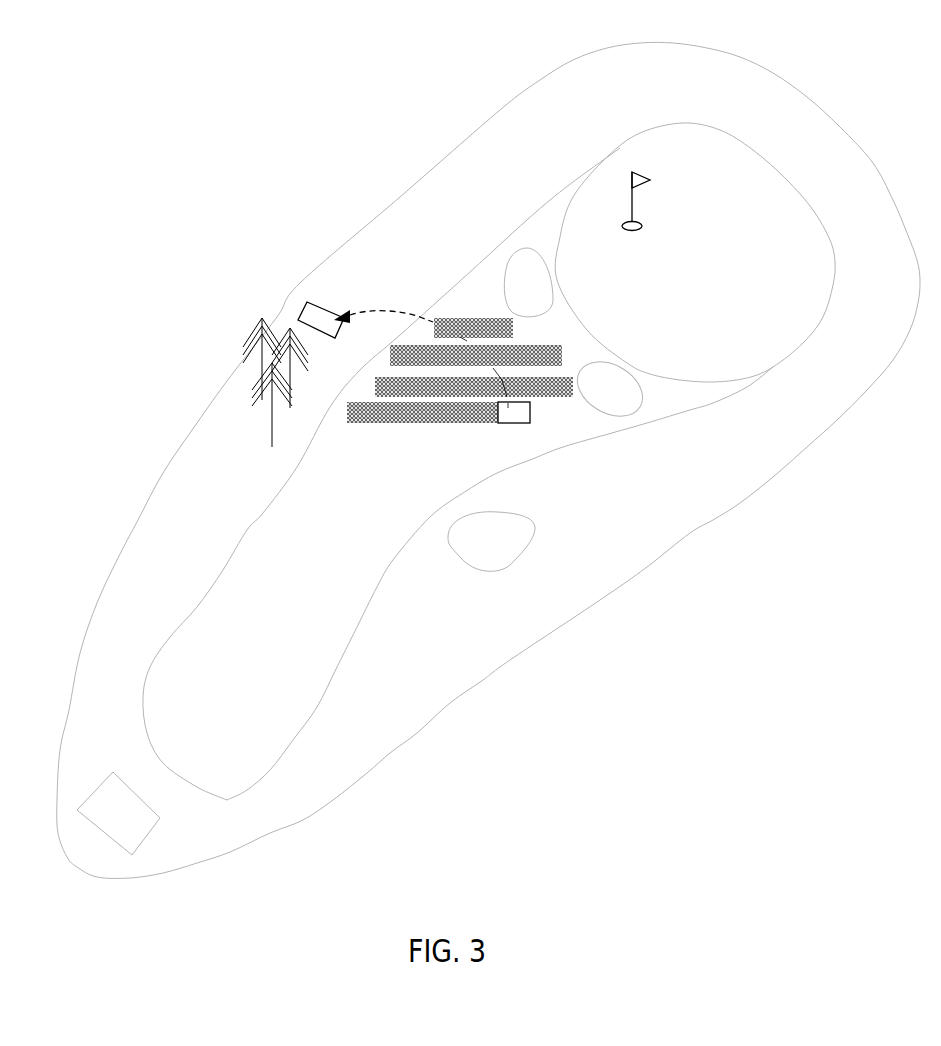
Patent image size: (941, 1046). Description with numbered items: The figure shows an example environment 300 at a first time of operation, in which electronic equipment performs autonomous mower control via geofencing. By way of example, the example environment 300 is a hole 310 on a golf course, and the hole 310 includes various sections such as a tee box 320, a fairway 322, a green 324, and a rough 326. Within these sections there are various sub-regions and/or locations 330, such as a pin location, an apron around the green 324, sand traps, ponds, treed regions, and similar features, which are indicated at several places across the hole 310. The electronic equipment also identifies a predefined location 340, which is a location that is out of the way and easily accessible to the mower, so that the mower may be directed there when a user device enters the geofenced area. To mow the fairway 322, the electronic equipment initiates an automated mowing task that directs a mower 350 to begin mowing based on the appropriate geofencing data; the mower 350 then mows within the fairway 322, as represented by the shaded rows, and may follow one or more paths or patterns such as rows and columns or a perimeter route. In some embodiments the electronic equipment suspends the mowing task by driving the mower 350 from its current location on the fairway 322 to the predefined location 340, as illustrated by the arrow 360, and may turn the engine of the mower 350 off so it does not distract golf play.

The example environment 300 is at (148, 99).
The hole 310 is at (352, 785).
The tee box 320 is at (122, 798).
The fairway 322 is at (263, 537).
The green 324 is at (670, 140).
The rough 326 is at (335, 270).
The sub-regions and/or locations 330 is at (232, 377).
The predefined location 340 is at (288, 312).
The mower 350 is at (513, 424).
The arrow 360 is at (380, 310).